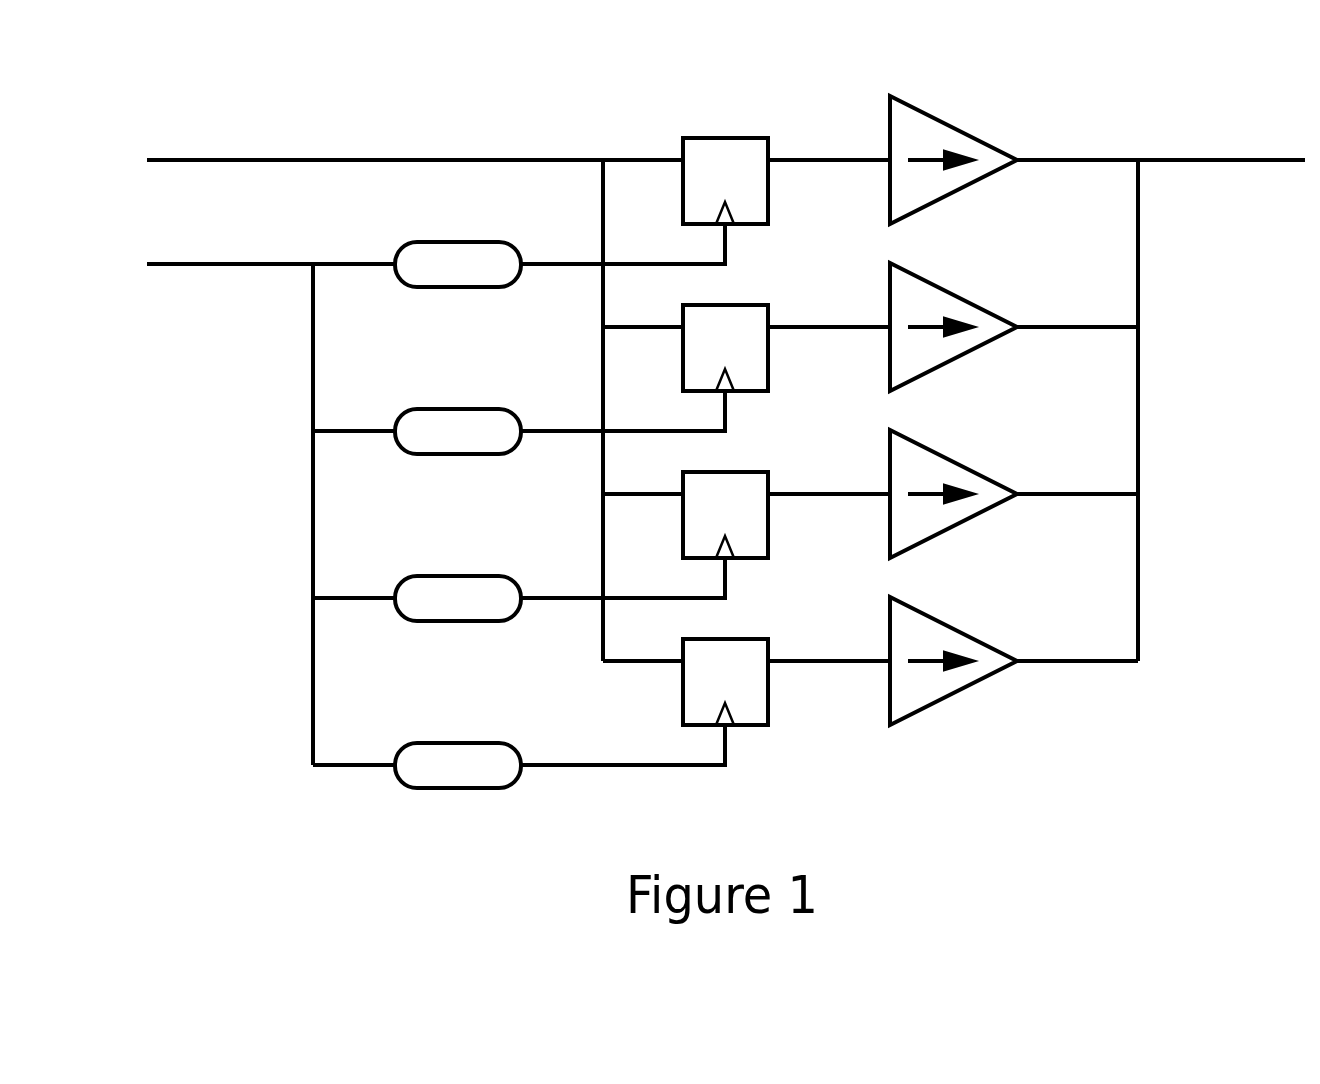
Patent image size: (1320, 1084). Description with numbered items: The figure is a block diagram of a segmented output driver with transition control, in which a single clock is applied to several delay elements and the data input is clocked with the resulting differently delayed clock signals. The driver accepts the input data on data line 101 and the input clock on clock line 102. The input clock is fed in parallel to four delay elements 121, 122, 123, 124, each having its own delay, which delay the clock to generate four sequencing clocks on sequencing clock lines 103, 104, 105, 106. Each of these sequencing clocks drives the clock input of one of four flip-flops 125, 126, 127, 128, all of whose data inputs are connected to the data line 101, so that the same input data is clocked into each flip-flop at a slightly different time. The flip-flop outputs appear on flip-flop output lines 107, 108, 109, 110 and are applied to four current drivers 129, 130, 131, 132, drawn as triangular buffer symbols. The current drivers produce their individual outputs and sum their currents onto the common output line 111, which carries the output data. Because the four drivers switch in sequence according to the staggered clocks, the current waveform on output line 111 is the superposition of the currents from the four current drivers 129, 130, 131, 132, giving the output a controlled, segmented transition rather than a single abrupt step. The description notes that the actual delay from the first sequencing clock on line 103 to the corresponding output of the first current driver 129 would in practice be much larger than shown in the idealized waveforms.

The data input line 101 is at (297, 158).
The input clock line 102 is at (233, 262).
The sequencing clock line c1 103 is at (571, 268).
The sequencing clock line c2 104 is at (571, 435).
The sequencing clock line c3 105 is at (571, 602).
The sequencing clock line c4 106 is at (571, 769).
The flip-flop output line d1 107 is at (835, 166).
The flip-flop output line d2 108 is at (835, 333).
The flip-flop output line d3 109 is at (835, 500).
The flip-flop output line d4 110 is at (835, 667).
The output line 111 is at (1237, 170).
The delay element 121 is at (410, 241).
The delay element 122 is at (410, 408).
The delay element 123 is at (410, 575).
The delay element 124 is at (410, 742).
The flip-flop 125 is at (738, 137).
The flip-flop 126 is at (738, 304).
The flip-flop 127 is at (738, 471).
The flip-flop 128 is at (738, 638).
The current driver 129 is at (973, 184).
The current driver 130 is at (973, 351).
The current driver 131 is at (973, 518).
The current driver 132 is at (973, 685).